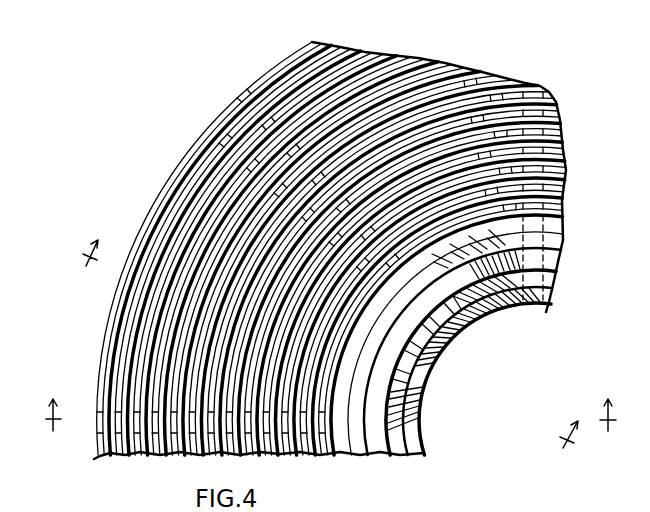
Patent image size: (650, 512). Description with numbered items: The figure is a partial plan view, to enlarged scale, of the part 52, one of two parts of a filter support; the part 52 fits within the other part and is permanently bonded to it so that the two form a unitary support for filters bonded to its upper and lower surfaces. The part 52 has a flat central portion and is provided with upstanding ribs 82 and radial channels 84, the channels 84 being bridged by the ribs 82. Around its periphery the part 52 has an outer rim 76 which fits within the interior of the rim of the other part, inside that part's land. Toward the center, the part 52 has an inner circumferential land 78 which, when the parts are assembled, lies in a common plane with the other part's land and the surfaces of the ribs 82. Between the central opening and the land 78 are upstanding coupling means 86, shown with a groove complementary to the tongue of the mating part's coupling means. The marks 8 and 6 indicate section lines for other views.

The part 52 is at (424, 54).
The outer rim 76 is at (254, 80).
The radial channels 84 is at (256, 146).
The upstanding ribs 82 is at (490, 115).
The inner circumferential land 78 is at (560, 241).
The coupling means 86 is at (557, 287).
The section line 8- 8 is at (326, 354).
The section line 6- 6 is at (331, 425).